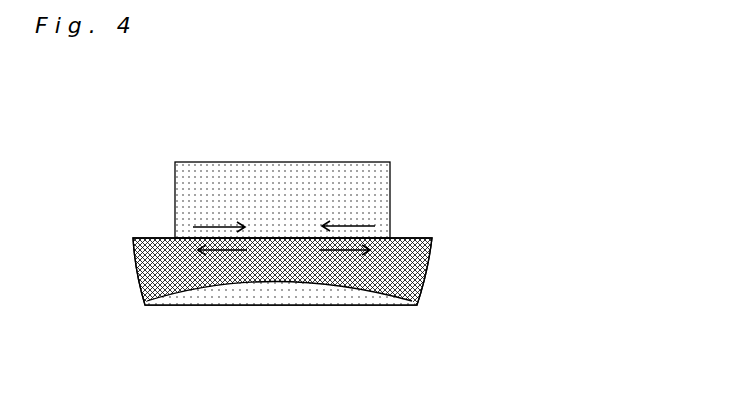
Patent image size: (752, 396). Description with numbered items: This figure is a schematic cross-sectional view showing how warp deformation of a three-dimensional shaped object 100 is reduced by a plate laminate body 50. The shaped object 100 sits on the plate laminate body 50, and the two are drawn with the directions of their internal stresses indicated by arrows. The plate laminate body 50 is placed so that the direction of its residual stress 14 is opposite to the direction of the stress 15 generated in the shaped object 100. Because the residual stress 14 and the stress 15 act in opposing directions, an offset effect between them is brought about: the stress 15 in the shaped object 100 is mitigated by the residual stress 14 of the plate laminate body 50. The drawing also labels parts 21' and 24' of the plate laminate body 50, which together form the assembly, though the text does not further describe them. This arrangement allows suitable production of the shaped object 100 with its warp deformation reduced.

The three-dimensional shaped object 100 is at (220, 165).
The stress generated in the three-dimensional shaped object 15 is at (212, 225).
The residual stress of the plate laminate body 14 is at (210, 254).
The substrate (warped) 21' is at (324, 288).
The deformed lower surface of substrate 24' is at (330, 310).
The plate laminate body 50 is at (528, 238).